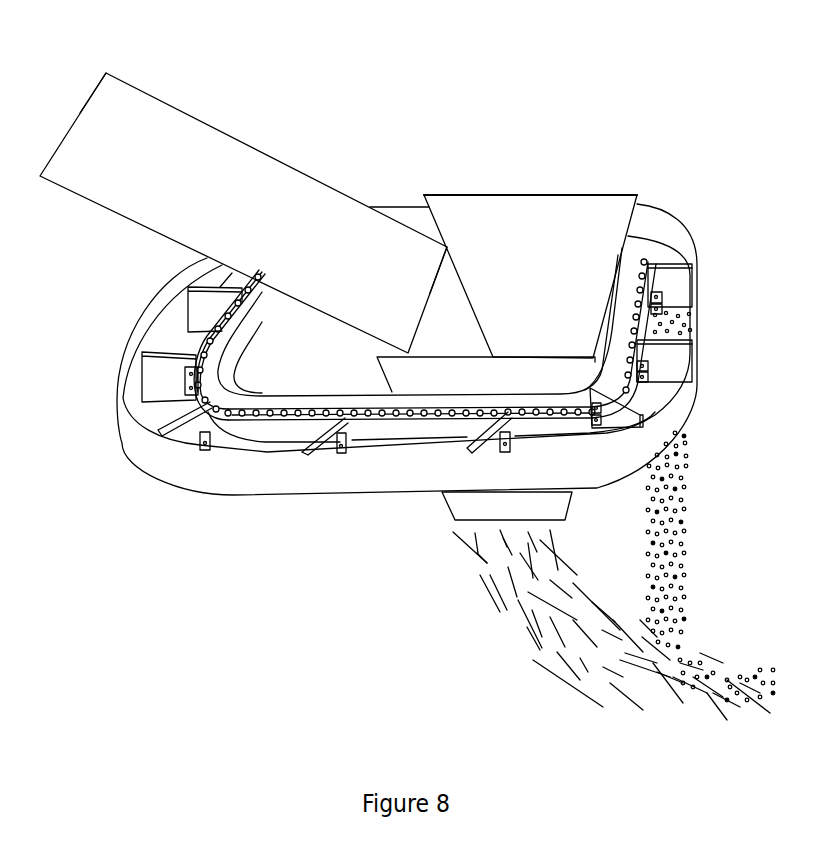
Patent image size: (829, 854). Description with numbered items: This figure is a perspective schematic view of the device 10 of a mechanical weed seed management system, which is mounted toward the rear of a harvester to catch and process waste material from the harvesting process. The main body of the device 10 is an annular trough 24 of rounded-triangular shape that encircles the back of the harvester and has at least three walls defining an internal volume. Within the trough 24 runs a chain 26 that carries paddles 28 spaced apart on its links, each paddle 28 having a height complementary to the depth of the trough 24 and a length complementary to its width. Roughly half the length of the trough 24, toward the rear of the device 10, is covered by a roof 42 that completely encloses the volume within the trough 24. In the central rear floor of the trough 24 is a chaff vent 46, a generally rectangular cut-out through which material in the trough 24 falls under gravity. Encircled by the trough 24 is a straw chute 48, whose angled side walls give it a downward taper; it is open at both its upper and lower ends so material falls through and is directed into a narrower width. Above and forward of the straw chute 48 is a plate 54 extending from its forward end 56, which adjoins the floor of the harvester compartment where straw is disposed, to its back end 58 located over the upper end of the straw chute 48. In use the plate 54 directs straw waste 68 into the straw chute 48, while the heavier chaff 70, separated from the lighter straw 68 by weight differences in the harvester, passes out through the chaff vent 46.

The device 10 is at (562, 90).
The trough 24 is at (359, 487).
The chain 26 is at (283, 433).
The paddles 28 is at (178, 430).
The roof 42 is at (422, 437).
The chaff vent 46 is at (670, 326).
The straw chute 48 is at (549, 329).
The plate 54 is at (277, 231).
The forward end 56 is at (92, 95).
The back end 58 is at (430, 297).
The straw waste 68 is at (533, 643).
The chaff 70 is at (670, 531).